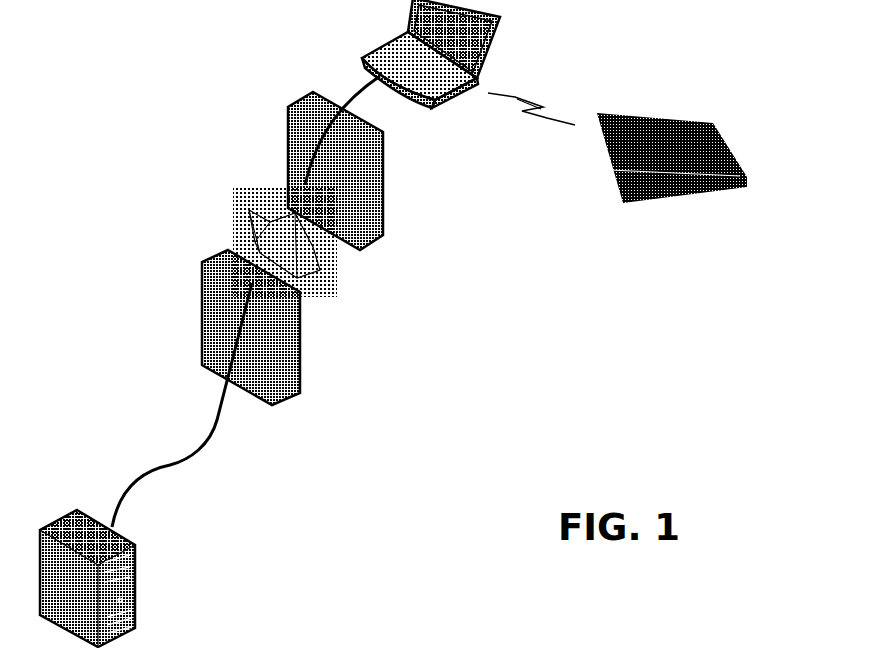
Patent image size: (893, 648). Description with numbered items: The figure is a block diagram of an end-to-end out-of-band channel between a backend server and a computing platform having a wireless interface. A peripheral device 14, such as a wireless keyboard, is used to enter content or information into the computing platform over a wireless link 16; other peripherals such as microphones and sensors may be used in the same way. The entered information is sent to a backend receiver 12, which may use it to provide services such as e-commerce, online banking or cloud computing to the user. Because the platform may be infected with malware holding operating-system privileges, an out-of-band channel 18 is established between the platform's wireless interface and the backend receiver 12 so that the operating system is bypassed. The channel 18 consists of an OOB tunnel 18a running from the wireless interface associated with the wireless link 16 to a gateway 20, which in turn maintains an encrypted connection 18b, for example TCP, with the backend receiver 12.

The backend receiver 12 is at (125, 530).
The peripheral device 14 is at (680, 193).
The wireless link 16 is at (543, 120).
The out-of-band channel 18 is at (456, 280).
The OOB tunnel 18a is at (368, 100).
The encrypted connection 18b is at (200, 453).
The gateway 20 is at (217, 108).